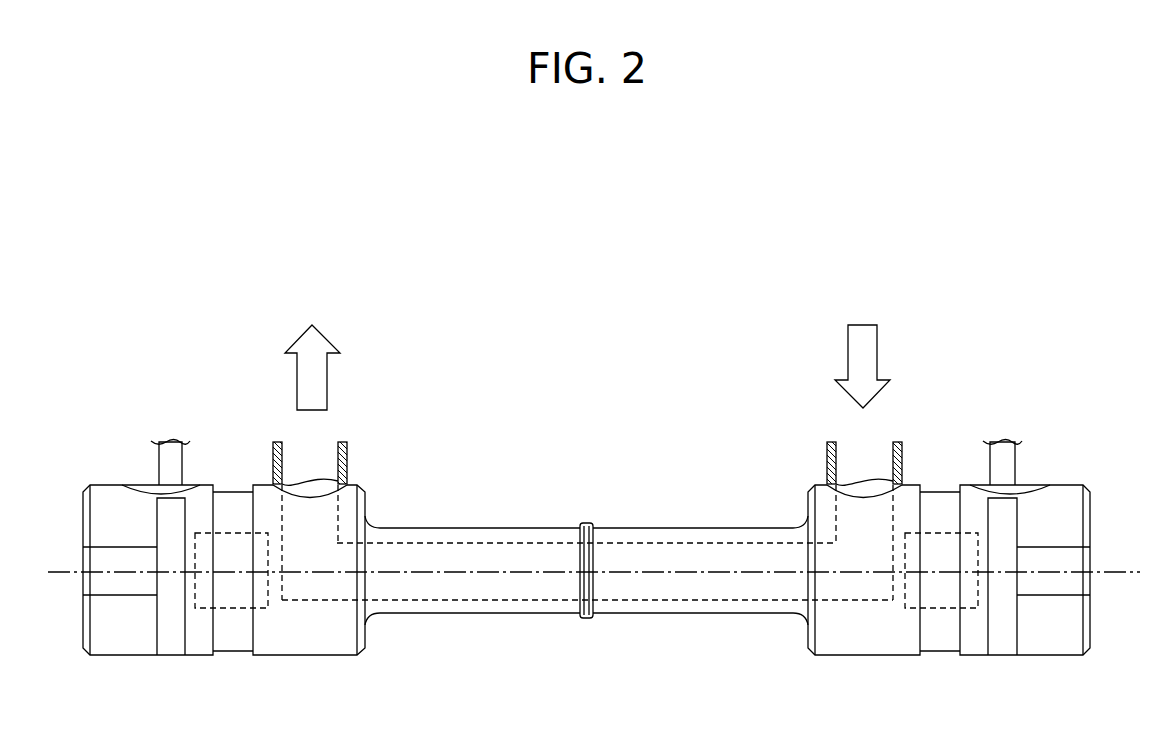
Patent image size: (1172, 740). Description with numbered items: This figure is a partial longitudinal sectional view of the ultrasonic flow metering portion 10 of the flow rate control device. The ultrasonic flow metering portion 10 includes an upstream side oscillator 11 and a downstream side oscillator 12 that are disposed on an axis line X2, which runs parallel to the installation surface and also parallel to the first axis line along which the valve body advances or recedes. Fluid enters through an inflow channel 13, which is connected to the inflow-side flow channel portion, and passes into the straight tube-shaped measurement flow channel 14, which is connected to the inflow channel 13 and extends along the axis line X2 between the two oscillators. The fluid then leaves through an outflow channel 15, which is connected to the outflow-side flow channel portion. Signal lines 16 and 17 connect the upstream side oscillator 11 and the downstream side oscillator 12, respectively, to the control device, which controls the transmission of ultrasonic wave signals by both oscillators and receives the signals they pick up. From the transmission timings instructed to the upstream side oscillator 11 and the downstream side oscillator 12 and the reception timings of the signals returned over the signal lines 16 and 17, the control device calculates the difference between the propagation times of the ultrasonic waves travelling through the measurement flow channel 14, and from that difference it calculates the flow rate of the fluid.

The ultrasonic flow metering portion 10 is at (742, 276).
The upstream side oscillator 11 is at (938, 608).
The downstream side oscillator 12 is at (230, 610).
The inflow channel 13 is at (850, 455).
The measurement flow channel 14 is at (688, 590).
The outflow channel 15 is at (318, 452).
The signal line 16 is at (1015, 459).
The signal line 17 is at (158, 453).
The axis line X2 is at (1120, 570).